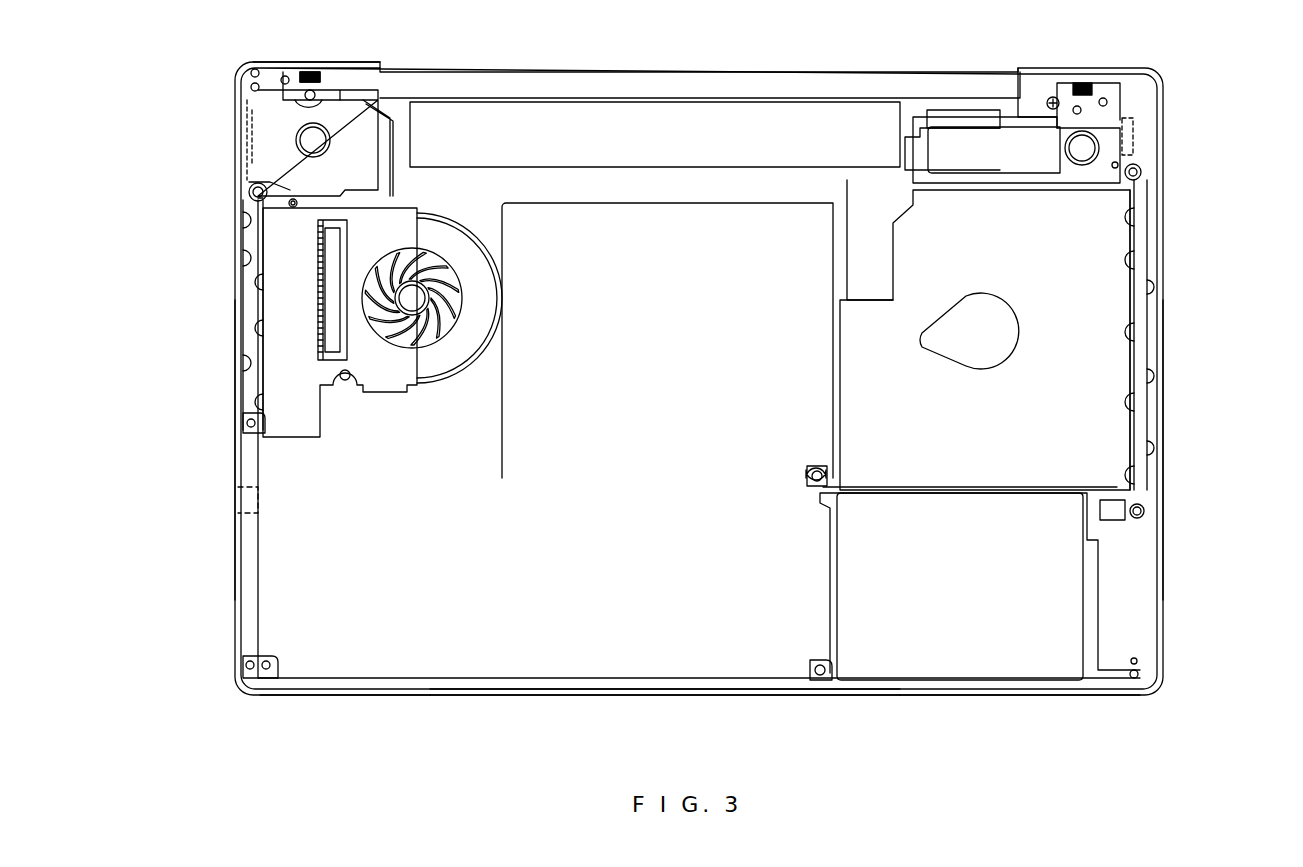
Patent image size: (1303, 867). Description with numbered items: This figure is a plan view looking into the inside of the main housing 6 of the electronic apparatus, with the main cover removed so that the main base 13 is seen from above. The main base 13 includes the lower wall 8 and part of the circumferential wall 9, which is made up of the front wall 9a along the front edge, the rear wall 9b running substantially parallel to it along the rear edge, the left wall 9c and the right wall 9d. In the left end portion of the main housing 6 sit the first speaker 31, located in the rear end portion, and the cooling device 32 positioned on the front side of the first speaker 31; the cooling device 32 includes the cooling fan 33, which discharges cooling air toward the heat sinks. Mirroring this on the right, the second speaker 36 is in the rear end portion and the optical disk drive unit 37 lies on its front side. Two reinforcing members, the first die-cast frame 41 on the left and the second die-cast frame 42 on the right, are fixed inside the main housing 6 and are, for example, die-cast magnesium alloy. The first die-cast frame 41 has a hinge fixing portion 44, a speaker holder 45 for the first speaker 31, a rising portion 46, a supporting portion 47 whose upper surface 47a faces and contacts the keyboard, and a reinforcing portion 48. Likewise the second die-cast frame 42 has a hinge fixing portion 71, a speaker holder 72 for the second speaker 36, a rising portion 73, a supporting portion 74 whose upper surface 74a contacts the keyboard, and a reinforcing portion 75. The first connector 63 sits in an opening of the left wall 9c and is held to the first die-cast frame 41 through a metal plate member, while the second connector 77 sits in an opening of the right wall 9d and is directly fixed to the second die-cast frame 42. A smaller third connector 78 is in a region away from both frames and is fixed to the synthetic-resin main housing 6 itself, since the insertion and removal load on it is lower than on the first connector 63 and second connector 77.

The main housing 6 is at (360, 698).
The lower wall 8 is at (477, 690).
The circumferential wall 9 is at (232, 603).
The front wall 9a is at (662, 697).
The rear wall 9b is at (360, 62).
The left wall 9c is at (235, 457).
The right wall 9d is at (1160, 470).
The main base 13 is at (765, 698).
The first speaker 31 is at (270, 118).
The cooling device 32 is at (440, 350).
The cooling fan 33 is at (480, 268).
The second speaker 36 is at (1100, 133).
The optical disk drive unit 37 is at (853, 258).
The first die-cast frame 41 is at (258, 313).
The second die-cast frame 42 is at (1108, 312).
The hinge fixing portion 44 is at (297, 75).
The speaker holder 45 is at (287, 187).
The rising portion 46 is at (392, 207).
The supporting portion 47 is at (298, 392).
The surface 47a is at (303, 317).
The reinforcing portion 48 is at (253, 352).
The first connector 63 is at (247, 160).
The hinge fixing portion 71 is at (1083, 90).
The speaker holder 72 is at (966, 116).
The rising portion 73 is at (1020, 165).
The supporting portion 74 is at (945, 447).
The surface 74a is at (1105, 402).
The reinforcing portion 75 is at (1150, 362).
The second connector 77 is at (1140, 160).
The third connector 78 is at (240, 520).